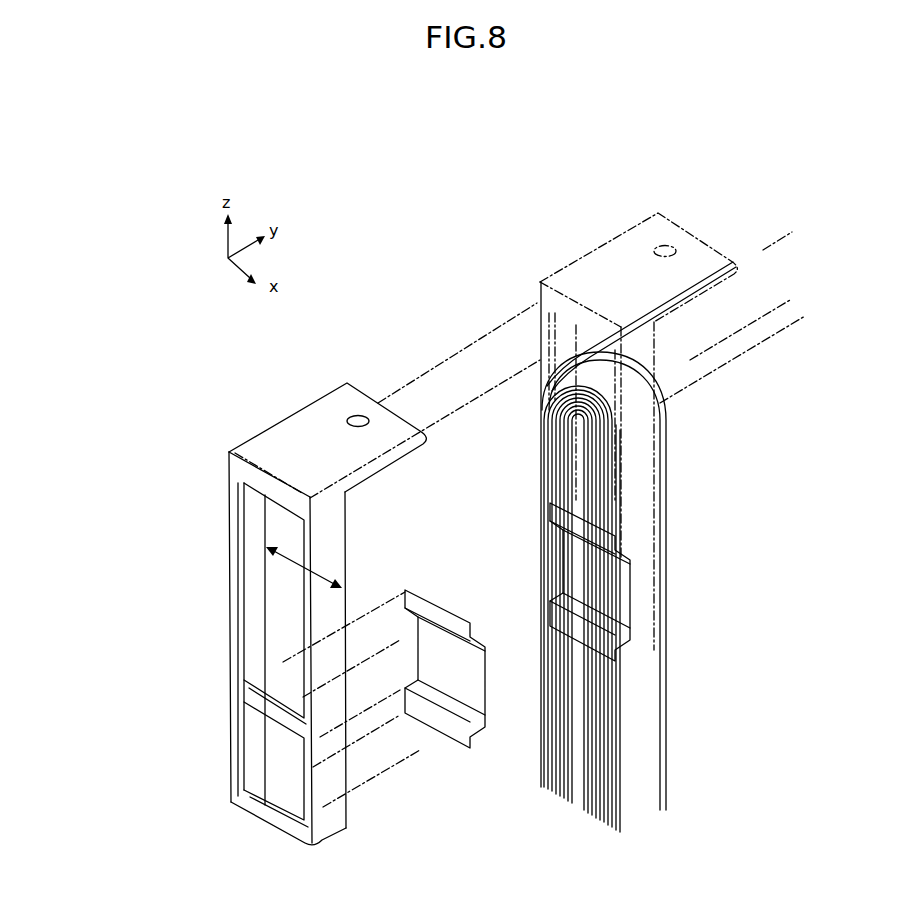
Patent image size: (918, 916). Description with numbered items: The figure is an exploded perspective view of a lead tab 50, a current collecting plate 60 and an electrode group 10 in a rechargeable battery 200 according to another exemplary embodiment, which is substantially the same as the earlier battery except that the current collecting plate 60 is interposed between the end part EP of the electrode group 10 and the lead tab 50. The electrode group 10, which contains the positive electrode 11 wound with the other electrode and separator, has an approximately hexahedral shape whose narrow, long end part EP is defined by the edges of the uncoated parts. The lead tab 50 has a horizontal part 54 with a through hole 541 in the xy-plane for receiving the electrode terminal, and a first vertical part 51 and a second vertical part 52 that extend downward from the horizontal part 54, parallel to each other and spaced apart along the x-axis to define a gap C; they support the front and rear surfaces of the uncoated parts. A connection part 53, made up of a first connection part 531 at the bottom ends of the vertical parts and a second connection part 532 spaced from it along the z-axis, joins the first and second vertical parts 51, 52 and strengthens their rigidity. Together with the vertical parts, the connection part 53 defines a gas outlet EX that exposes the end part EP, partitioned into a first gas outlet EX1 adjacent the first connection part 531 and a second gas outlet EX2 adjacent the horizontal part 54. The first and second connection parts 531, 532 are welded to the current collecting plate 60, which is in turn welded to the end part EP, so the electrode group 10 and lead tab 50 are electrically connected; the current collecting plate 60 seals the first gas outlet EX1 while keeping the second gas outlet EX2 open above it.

The rechargeable battery 200 is at (417, 231).
The electrode group 10 is at (710, 306).
The positive electrode 11 is at (648, 701).
The lead tab 50 is at (239, 434).
The first vertical part 51 is at (313, 763).
The second vertical part 52 is at (248, 629).
The connection part 53 is at (433, 806).
The first connection part 531 is at (284, 838).
The second connection part 532 is at (283, 790).
The horizontal part 54 is at (298, 428).
The through hole 541 is at (354, 415).
The current collecting plate 60 is at (440, 600).
The gap C is at (272, 577).
The gas outlet EX is at (149, 652).
The first gas outlet EX1 is at (254, 768).
The second gas outlet EX2 is at (254, 668).
The end part EP is at (605, 759).